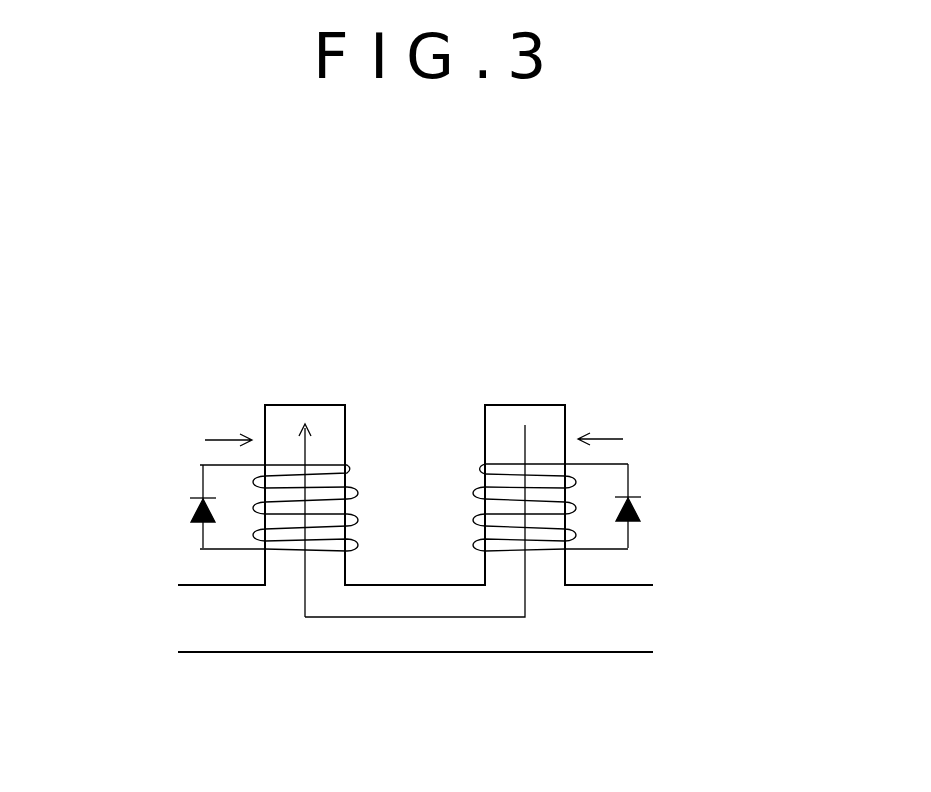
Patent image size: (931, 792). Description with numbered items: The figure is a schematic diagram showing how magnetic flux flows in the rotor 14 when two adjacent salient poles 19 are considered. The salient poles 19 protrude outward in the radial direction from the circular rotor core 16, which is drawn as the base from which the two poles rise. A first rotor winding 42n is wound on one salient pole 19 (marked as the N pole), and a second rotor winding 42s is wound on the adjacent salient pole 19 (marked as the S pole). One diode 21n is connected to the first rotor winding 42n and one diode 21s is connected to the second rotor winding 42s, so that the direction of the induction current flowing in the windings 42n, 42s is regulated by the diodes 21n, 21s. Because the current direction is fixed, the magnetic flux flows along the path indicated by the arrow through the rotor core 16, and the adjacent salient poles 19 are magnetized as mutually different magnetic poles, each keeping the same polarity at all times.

The rotor 14 is at (458, 460).
The salient pole 19 is at (275, 415).
The first rotor winding 42n is at (358, 466).
The second rotor winding 42s is at (471, 545).
The diode 21n is at (190, 510).
The diode 21s is at (641, 505).
The rotor core 16 is at (625, 625).